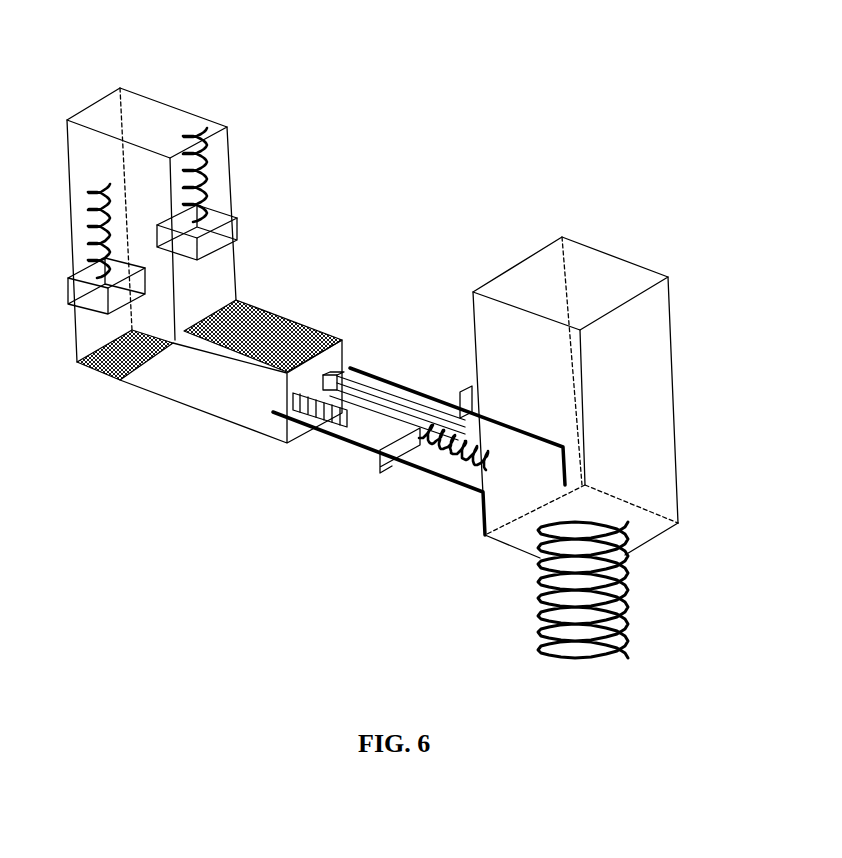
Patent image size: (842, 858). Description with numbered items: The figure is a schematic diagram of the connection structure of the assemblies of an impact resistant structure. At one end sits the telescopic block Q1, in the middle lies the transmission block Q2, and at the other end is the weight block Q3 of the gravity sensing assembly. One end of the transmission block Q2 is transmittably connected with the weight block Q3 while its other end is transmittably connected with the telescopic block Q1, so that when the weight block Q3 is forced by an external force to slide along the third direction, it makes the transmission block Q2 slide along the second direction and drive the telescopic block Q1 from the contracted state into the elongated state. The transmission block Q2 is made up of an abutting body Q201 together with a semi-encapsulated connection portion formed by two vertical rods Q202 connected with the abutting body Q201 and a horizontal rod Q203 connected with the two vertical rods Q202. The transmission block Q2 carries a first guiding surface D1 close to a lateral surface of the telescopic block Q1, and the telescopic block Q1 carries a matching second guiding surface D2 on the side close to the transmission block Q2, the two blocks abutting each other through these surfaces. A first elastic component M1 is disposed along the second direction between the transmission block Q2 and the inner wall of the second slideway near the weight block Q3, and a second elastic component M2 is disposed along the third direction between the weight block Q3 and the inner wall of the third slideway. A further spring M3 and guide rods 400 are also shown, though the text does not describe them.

The telescopic block Q1 is at (157, 132).
The third spring M3 is at (200, 165).
The first guiding surface D1 is at (173, 345).
The second guiding surface D2 is at (175, 340).
The transmission block Q2 is at (163, 450).
The abutting body Q201 is at (268, 403).
The vertical rods Q202 is at (327, 437).
The horizontal rod Q203 is at (398, 438).
The guide rods 400 is at (350, 363).
The weight block Q3 is at (648, 390).
The first elastic component M1 is at (460, 462).
The second elastic component M2 is at (628, 627).